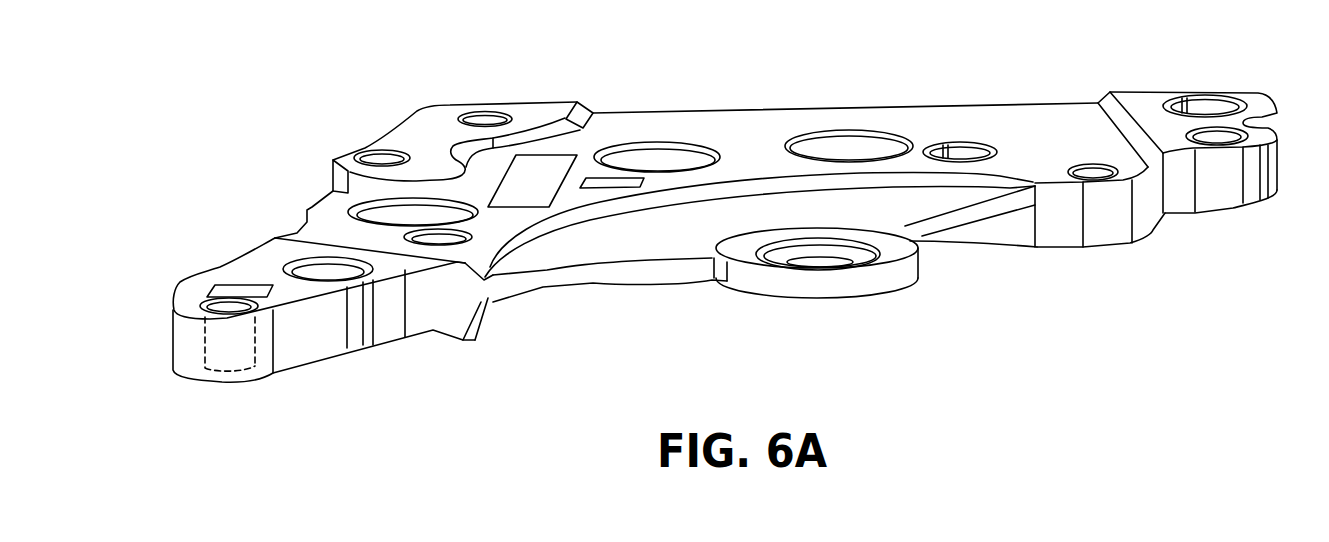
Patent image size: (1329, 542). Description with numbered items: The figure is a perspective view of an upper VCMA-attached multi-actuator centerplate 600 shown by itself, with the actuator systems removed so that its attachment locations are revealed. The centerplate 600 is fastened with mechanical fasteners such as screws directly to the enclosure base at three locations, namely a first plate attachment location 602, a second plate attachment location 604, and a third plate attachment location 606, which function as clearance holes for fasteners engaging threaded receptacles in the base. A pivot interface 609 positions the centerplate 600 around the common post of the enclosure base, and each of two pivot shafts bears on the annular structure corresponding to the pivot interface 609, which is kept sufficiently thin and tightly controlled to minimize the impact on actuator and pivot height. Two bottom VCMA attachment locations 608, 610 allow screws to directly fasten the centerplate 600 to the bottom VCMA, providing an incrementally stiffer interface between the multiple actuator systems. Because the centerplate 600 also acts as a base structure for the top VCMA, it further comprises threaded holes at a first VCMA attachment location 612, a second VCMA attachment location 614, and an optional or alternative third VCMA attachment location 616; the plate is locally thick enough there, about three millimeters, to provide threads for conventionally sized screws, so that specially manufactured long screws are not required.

The centerplate 600 is at (283, 120).
The first plate attachment location 602 is at (230, 310).
The second plate attachment location 604 is at (1260, 122).
The third plate attachment location 606 is at (383, 157).
The bottom VCMA attachment location 608 is at (385, 215).
The pivot interface 609 is at (867, 257).
The bottom VCMA attachment location 610 is at (853, 145).
The first VCMA attachment location 612 is at (367, 262).
The second VCMA attachment location 614 is at (1207, 107).
The third VCMA attachment location 616 is at (489, 117).